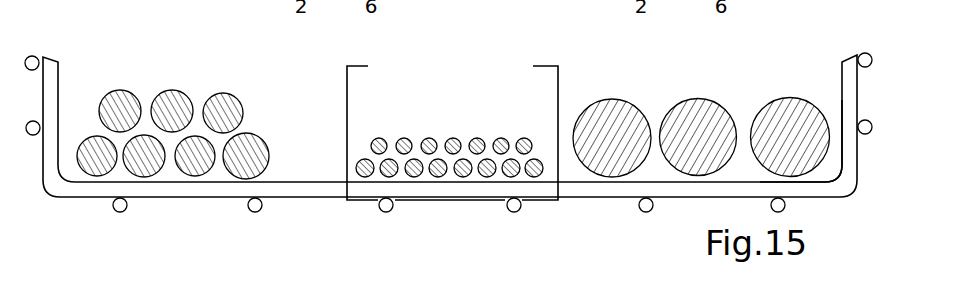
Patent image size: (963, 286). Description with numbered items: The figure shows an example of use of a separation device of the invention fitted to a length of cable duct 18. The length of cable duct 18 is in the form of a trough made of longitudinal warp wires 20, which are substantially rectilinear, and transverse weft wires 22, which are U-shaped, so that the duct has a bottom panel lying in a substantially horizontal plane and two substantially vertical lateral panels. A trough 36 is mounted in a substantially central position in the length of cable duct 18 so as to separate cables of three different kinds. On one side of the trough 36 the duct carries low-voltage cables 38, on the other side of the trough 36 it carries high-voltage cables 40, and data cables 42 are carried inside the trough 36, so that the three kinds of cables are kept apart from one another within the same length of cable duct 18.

The length of cable duct 18 is at (56, 186).
The warp wires 20 is at (872, 58).
The weft wires 22 is at (843, 190).
The trough 36 is at (558, 87).
The low-voltage cables 38 is at (198, 176).
The high-voltage cables 40 is at (698, 113).
The data cables 42 is at (463, 177).